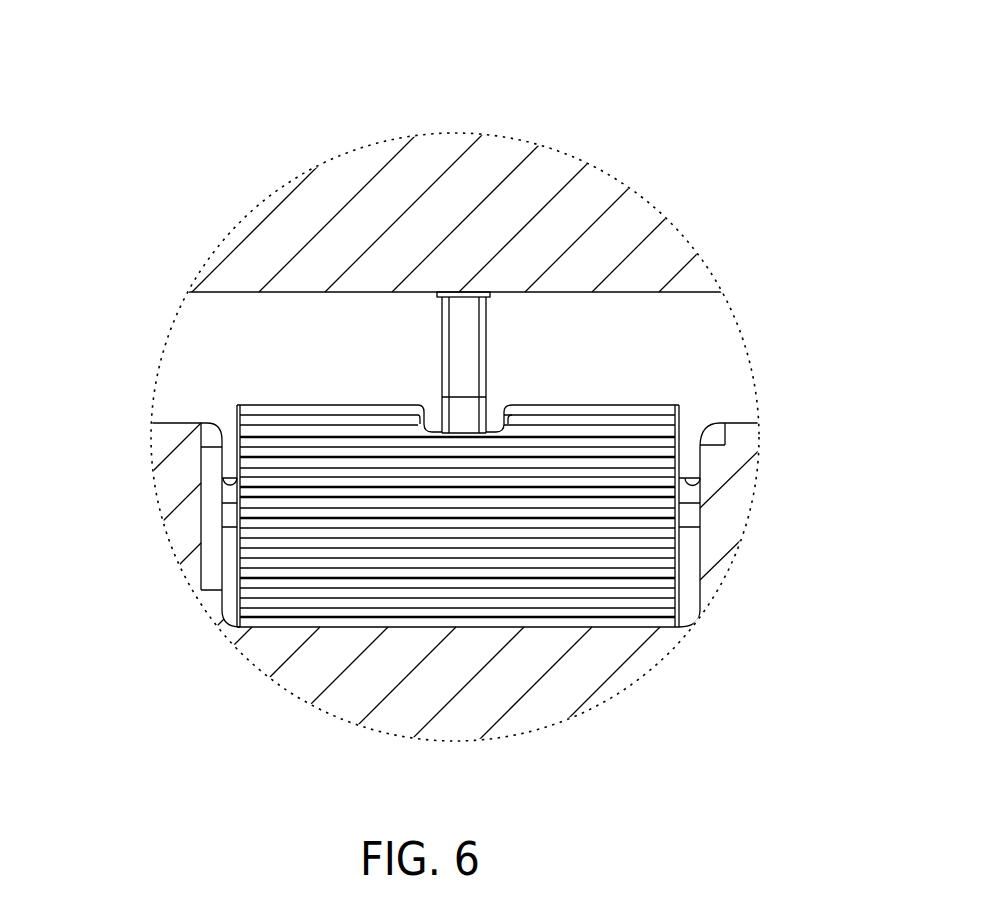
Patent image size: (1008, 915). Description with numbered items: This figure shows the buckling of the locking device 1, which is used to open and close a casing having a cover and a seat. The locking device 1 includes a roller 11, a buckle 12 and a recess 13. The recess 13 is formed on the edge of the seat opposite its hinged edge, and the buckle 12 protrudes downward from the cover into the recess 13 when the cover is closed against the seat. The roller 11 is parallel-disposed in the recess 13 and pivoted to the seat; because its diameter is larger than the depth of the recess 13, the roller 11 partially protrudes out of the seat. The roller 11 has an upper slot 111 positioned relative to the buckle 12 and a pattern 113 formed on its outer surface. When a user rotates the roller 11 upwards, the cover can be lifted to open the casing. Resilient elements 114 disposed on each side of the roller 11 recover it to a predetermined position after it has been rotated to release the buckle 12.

The locking device 1 is at (666, 182).
The roller 11 is at (679, 404).
The upper slot 111 is at (493, 413).
The pattern 113 is at (341, 430).
The resilient elements 114 is at (230, 511).
The buckle 12 is at (468, 330).
The recess 13 is at (229, 418).